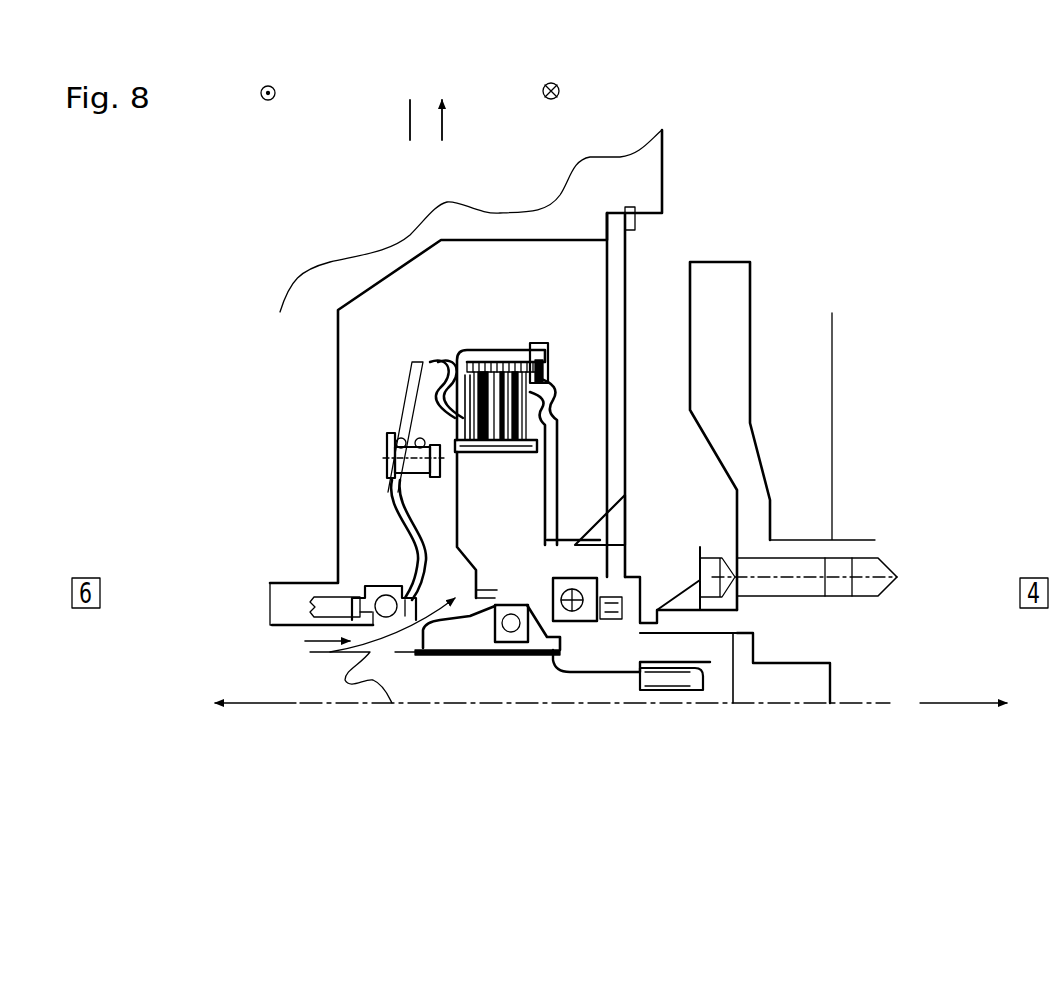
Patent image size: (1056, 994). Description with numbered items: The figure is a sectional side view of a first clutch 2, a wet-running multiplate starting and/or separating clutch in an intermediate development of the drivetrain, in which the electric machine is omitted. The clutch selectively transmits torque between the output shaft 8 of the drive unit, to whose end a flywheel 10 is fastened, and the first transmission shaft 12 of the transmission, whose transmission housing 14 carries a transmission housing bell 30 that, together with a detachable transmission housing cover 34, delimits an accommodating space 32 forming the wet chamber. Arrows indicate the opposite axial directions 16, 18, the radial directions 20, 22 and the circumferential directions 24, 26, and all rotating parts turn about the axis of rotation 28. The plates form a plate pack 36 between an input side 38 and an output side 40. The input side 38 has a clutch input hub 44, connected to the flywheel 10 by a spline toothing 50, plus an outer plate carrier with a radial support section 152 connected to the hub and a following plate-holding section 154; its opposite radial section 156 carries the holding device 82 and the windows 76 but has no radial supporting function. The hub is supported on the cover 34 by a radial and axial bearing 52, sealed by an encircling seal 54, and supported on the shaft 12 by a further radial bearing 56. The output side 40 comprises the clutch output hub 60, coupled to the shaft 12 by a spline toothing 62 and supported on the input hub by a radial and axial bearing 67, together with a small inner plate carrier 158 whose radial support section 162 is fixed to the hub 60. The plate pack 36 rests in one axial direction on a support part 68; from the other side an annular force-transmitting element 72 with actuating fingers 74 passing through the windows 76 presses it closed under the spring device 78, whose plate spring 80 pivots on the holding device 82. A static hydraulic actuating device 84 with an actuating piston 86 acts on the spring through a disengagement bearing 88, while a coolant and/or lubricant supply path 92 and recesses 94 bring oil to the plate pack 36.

The first clutch 2 is at (556, 392).
The output shaft 8 is at (820, 630).
The flywheel 10 is at (720, 300).
The first transmission shaft 12 is at (377, 668).
The transmission housing 14 is at (272, 418).
The axial direction 16 is at (940, 706).
The axial direction 18 is at (266, 706).
The radial direction 20 is at (444, 125).
The radial direction 22 is at (408, 115).
The circumferential direction 24 is at (261, 98).
The circumferential direction 26 is at (557, 98).
The axis of rotation 28 is at (840, 706).
The transmission housing bell 30 is at (345, 263).
The accommodating space 32 is at (428, 332).
The transmission housing cover 34 is at (612, 307).
The plate pack 36 is at (520, 425).
The input side 38 is at (550, 503).
The output side 40 is at (455, 522).
The clutch input hub 44 is at (645, 647).
The spline toothing 50 is at (727, 637).
The radial and axial bearing 52 is at (583, 622).
The encircling seal 54 is at (620, 612).
The further radial bearing 56 is at (680, 671).
The clutch output hub 60 is at (448, 643).
The spline toothing 62 is at (479, 655).
The radial and axial bearing 67 is at (511, 633).
The support part 68 is at (553, 405).
The force-transmitting element 72 is at (418, 368).
The actuating fingers 74 is at (463, 385).
The windows 76 is at (450, 390).
The spring device 78 is at (405, 400).
The plate spring 80 is at (395, 470).
The holding device 82 is at (372, 453).
The actuating device 84 is at (325, 591).
The actuating piston 86 is at (312, 610).
The disengagement bearing 88 is at (392, 618).
The coolant and/or lubricant supply path 92 is at (372, 643).
The recesses 94 is at (546, 577).
The radial support section 152 is at (555, 505).
The plate-holding section 154 is at (505, 362).
The radial section 156 is at (407, 427).
The inner plate carrier 158 is at (440, 492).
The radial support section 162 is at (583, 548).